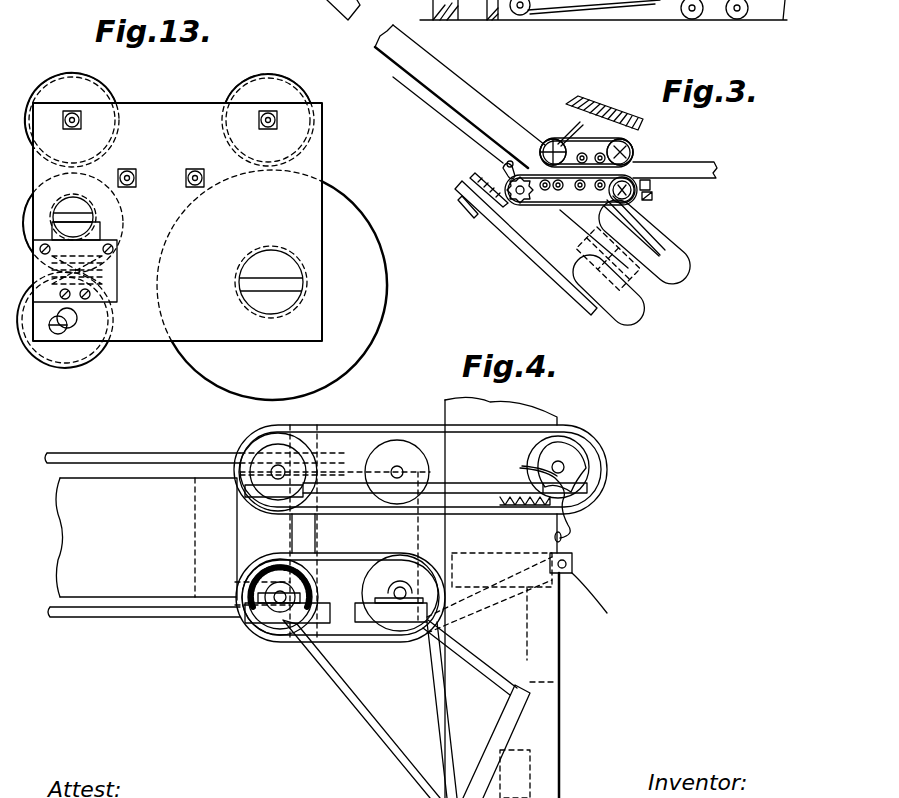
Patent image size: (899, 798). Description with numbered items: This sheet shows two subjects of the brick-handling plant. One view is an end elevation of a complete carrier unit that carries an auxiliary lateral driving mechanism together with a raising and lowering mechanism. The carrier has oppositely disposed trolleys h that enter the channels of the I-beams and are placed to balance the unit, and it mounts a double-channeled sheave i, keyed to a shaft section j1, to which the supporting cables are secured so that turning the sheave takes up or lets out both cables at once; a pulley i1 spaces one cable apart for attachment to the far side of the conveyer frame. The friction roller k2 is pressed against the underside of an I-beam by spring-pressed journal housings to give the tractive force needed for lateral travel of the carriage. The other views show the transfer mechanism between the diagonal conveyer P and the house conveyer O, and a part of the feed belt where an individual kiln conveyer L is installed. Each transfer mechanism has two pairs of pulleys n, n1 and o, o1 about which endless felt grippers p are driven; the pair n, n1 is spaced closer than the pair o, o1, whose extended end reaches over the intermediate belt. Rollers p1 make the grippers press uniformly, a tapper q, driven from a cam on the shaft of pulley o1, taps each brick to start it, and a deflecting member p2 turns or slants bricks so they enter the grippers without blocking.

In FIG. 13, the trolleys h is at (90, 90).
In FIG. 13, the friction roller k2 is at (36, 232).
In FIG. 13, the pulley i1 is at (42, 353).
In FIG. 13, the sheave i is at (370, 278).
In FIG. 13, the shaft section j1 is at (272, 267).
In FIG. 3, the diagonal conveyer P is at (405, 55).
In FIG. 3, the endless grippers p is at (583, 142).
In FIG. 4, the endless grippers p is at (393, 433).
In FIG. 3, the rollers p1 is at (558, 185).
In FIG. 4, the deflecting member p2 is at (520, 690).
In FIG. 3, the pulley n is at (627, 150).
In FIG. 4, the pulley n is at (280, 623).
In FIG. 3, the pulley n1 is at (554, 150).
In FIG. 4, the pulley n1 is at (400, 623).
In FIG. 3, the house conveyer O is at (675, 168).
In FIG. 4, the house conveyer O is at (547, 712).
In FIG. 3, the pulley o is at (629, 196).
In FIG. 4, the pulley o is at (263, 448).
In FIG. 3, the pulley o1 is at (522, 195).
In FIG. 4, the pulley o1 is at (563, 438).
In FIG. 3, the tapper q is at (503, 173).
In FIG. 4, the tapper q is at (563, 537).
In FIG. 4, the individual kiln conveyer L is at (142, 535).